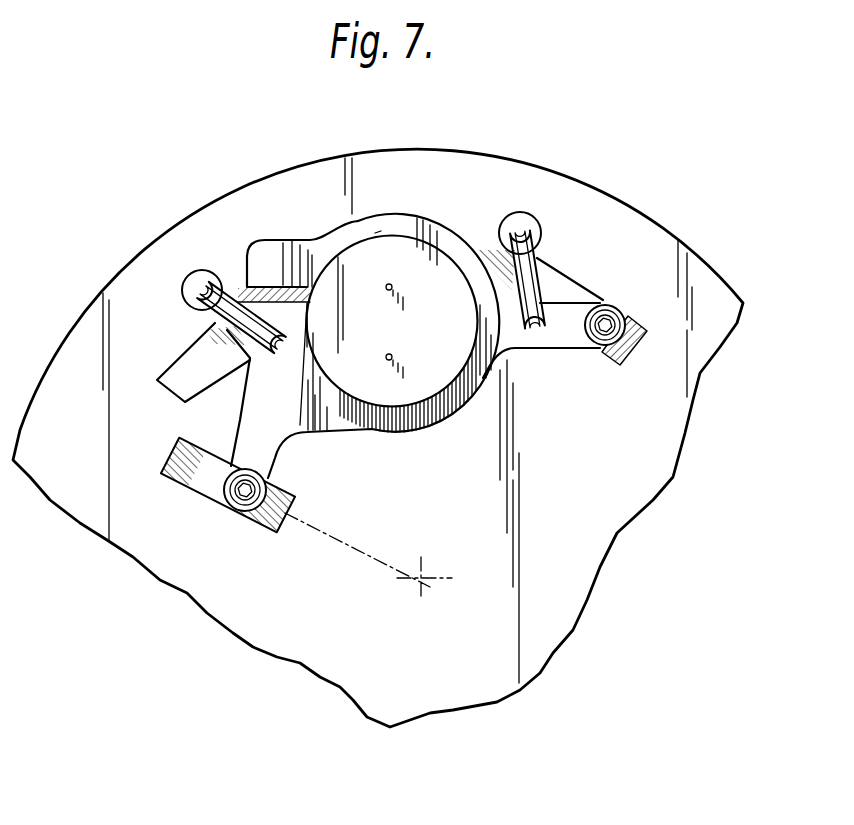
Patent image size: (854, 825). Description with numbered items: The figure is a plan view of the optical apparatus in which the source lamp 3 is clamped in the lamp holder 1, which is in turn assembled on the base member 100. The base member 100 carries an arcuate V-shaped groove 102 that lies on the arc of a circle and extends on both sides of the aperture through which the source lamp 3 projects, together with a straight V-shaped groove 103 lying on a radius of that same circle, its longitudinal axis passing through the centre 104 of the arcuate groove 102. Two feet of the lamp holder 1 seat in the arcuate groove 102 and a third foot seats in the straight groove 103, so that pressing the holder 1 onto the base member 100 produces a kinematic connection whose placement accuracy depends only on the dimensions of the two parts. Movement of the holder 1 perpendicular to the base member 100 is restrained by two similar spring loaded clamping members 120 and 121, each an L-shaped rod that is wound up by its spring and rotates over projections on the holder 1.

The lamp holder 1 is at (431, 191).
The source lamp 3 is at (427, 262).
The base member 100 is at (531, 720).
The arcuate V-shaped groove 102 is at (178, 366).
The straight V-shaped groove 103 is at (203, 480).
The centre of the arcuate groove 104 is at (425, 582).
The spring loaded clamping member 120 is at (537, 267).
The spring loaded clamping member 121 is at (225, 270).